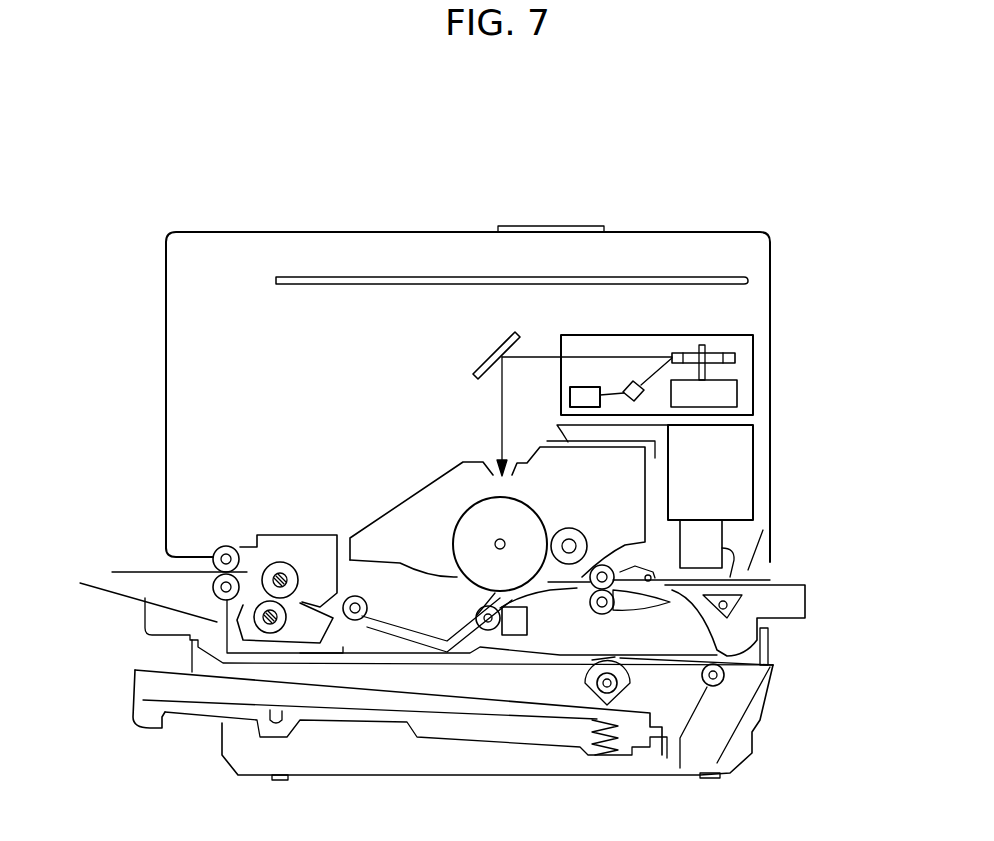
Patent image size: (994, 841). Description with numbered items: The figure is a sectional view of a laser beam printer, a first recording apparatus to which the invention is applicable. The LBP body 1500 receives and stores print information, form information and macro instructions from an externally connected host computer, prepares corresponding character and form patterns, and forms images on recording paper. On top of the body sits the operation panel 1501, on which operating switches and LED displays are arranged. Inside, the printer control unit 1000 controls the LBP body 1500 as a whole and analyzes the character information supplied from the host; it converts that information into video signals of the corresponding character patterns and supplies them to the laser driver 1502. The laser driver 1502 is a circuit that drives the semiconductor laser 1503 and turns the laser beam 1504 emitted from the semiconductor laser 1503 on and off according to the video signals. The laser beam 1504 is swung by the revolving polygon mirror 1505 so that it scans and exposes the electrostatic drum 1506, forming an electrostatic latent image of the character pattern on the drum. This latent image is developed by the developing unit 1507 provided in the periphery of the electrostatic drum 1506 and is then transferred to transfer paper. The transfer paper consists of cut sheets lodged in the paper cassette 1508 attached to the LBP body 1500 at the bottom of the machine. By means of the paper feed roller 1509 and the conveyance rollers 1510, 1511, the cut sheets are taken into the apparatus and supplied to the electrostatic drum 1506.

The LBP body 1500 is at (727, 232).
The operation panel 1501 is at (577, 226).
The printer control unit 1000 is at (747, 281).
The laser beam 1504 is at (639, 357).
The revolving polygon mirror 1505 is at (737, 355).
The semiconductor laser 1503 is at (640, 397).
The laser driver 1502 is at (568, 397).
The electrostatic drum 1506 is at (467, 508).
The developing unit 1507 is at (380, 528).
The conveyance roller 1511 is at (600, 614).
The paper cassette 1508 is at (135, 700).
The paper feed roller 1509 is at (587, 690).
The conveyance roller 1510 is at (707, 688).